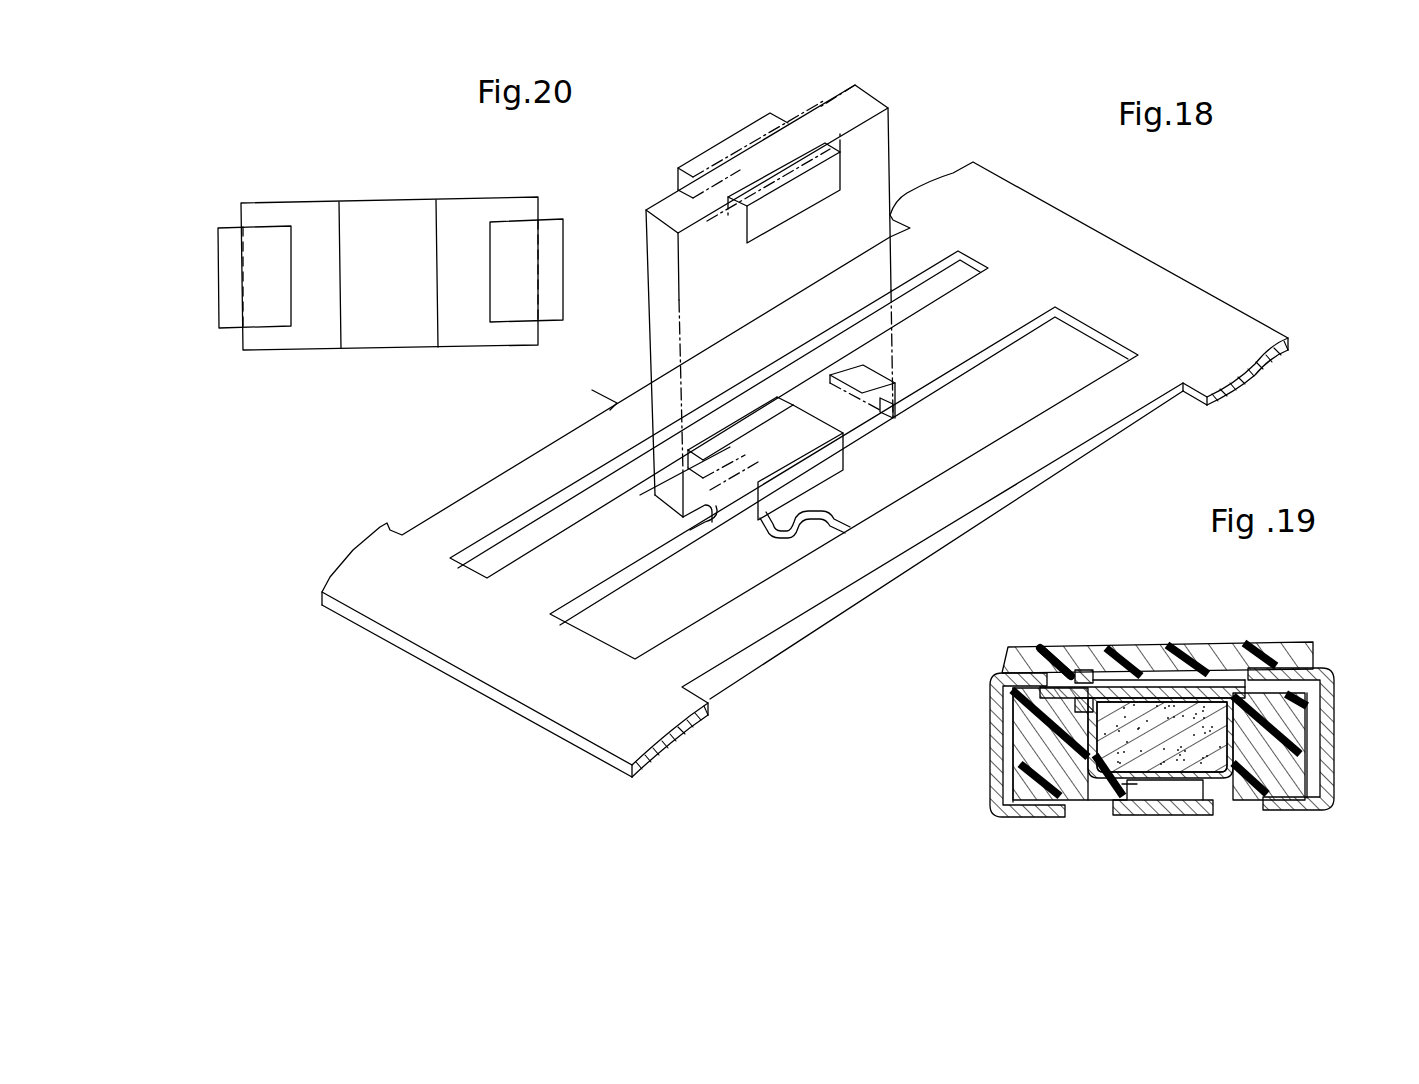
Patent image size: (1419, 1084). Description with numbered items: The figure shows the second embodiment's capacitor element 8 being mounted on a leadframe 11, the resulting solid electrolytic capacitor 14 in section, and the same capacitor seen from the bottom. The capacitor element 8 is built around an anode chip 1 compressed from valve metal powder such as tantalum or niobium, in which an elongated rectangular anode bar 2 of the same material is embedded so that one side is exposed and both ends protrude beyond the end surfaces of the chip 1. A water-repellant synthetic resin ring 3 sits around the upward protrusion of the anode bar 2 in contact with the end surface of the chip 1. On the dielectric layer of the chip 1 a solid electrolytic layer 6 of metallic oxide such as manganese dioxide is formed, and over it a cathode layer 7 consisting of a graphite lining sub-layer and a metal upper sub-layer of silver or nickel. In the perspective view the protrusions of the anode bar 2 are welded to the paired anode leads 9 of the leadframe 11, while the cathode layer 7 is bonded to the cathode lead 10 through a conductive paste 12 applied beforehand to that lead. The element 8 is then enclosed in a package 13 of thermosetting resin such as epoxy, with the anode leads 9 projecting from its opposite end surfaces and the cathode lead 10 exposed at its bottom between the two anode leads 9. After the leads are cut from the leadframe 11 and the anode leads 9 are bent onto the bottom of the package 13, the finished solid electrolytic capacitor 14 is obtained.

In FIG. 19, the anode chip 1 is at (1134, 655).
In FIG. 18, the anode bar 2 is at (838, 403).
In FIG. 19, the anode bar 2 is at (1047, 645).
In FIG. 19, the synthetic resin ring 3 is at (1080, 665).
In FIG. 19, the solid electrolytic layer 6 is at (1336, 750).
In FIG. 19, the cathode layer 7 is at (1337, 771).
In FIG. 18, the capacitor element 8 is at (737, 412).
In FIG. 19, the capacitor element 8 is at (1209, 670).
In FIG. 20, the anode leads 9 is at (228, 290).
In FIG. 18, the anode leads 9 is at (952, 312).
In FIG. 19, the anode leads 9 is at (1338, 697).
In FIG. 20, the cathode lead 10 is at (393, 228).
In FIG. 18, the cathode lead 10 is at (777, 528).
In FIG. 19, the cathode lead 10 is at (1183, 815).
In FIG. 18, the leadframe 11 is at (1162, 283).
In FIG. 19, the conductive paste 12 is at (1108, 800).
In FIG. 20, the package 13 is at (313, 226).
In FIG. 19, the package 13 is at (1043, 742).
In FIG. 20, the solid electrolytic capacitor 14 is at (504, 188).
In FIG. 19, the solid electrolytic capacitor 14 is at (1302, 630).